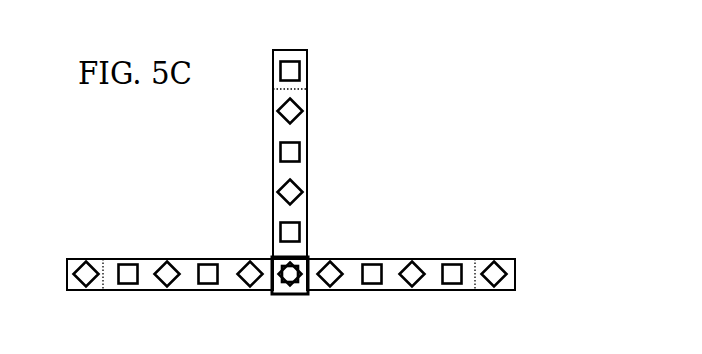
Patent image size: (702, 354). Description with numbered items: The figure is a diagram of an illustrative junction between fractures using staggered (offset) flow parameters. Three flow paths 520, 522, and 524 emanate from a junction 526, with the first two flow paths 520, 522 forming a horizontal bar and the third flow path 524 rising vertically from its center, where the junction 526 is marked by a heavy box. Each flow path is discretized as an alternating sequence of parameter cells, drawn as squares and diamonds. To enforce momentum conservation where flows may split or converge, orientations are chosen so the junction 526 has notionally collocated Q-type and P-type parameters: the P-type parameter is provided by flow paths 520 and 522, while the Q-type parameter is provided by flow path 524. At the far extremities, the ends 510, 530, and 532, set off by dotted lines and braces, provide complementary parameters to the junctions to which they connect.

The end 510 is at (103, 297).
The flow path 520 is at (143, 258).
The flow path 522 is at (427, 258).
The flow path 524 is at (274, 172).
The junction 526 is at (299, 295).
The end 530 is at (515, 294).
The end 532 is at (315, 52).